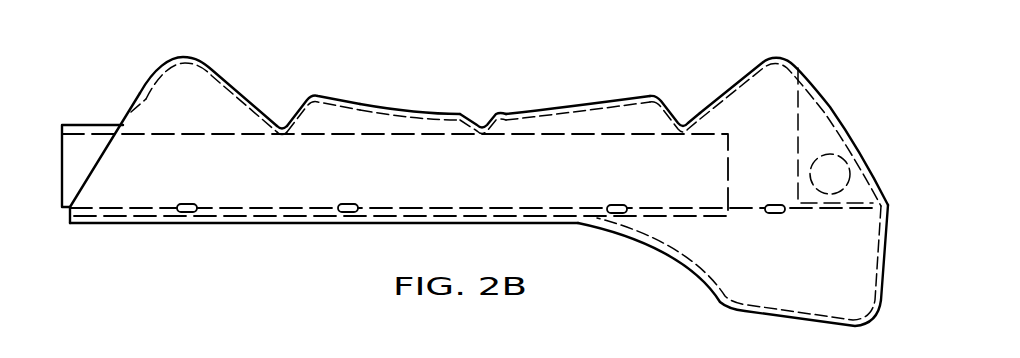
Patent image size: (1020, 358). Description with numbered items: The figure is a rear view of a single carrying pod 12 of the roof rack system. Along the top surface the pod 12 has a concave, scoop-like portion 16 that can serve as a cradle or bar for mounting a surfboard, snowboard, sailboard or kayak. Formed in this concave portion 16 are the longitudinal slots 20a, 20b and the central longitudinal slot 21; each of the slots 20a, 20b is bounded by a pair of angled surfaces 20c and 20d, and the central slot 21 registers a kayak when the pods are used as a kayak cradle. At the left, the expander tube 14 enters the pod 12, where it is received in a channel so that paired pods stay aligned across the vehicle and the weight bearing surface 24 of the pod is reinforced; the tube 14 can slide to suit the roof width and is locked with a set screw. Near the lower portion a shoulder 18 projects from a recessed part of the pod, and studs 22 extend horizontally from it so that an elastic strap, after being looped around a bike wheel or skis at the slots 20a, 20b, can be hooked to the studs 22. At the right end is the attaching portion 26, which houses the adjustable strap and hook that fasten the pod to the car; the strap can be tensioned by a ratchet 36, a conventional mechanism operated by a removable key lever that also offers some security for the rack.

The carrying pod 12 is at (133, 97).
The expander tube 14 is at (90, 125).
The concave, scoop-like portion 16 is at (362, 100).
The shoulder 18 is at (324, 290).
The longitudinal slot 20a is at (281, 124).
The longitudinal slot 20b is at (685, 122).
The angled surface 20c is at (240, 90).
The angled surface 20d is at (300, 105).
The central longitudinal slot 21 is at (485, 122).
The studs 22 is at (188, 203).
The weight bearing surface 24 is at (767, 317).
The attaching portion 26 is at (818, 122).
The ratchet 36 is at (837, 157).